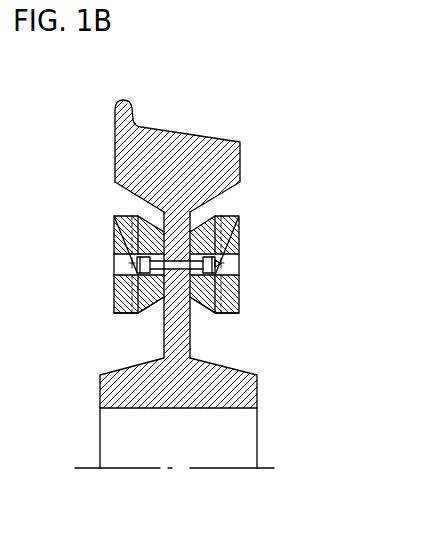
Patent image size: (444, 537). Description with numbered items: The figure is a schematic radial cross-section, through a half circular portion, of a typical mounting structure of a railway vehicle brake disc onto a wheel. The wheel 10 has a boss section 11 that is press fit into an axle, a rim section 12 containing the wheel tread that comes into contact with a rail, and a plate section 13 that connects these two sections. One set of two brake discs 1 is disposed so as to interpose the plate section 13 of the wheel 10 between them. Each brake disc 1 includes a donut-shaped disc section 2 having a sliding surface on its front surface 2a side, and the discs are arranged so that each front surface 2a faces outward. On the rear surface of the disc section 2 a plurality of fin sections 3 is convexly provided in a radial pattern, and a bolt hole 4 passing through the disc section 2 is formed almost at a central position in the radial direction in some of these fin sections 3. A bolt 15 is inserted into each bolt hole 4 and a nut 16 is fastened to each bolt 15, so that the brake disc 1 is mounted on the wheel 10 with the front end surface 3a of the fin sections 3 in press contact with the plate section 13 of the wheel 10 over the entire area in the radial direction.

The wheel 10 is at (209, 133).
The rim section 12 is at (240, 153).
The plate section 13 is at (192, 345).
The boss section 11 is at (256, 393).
The brake disc 1 is at (113, 231).
The disc section 2 is at (118, 214).
The front surface 2a is at (114, 292).
The fin sections 3 is at (142, 219).
The front end surface 3a is at (146, 311).
The bolt hole 4 is at (122, 268).
The bolt 15 is at (137, 260).
The nut 16 is at (218, 262).